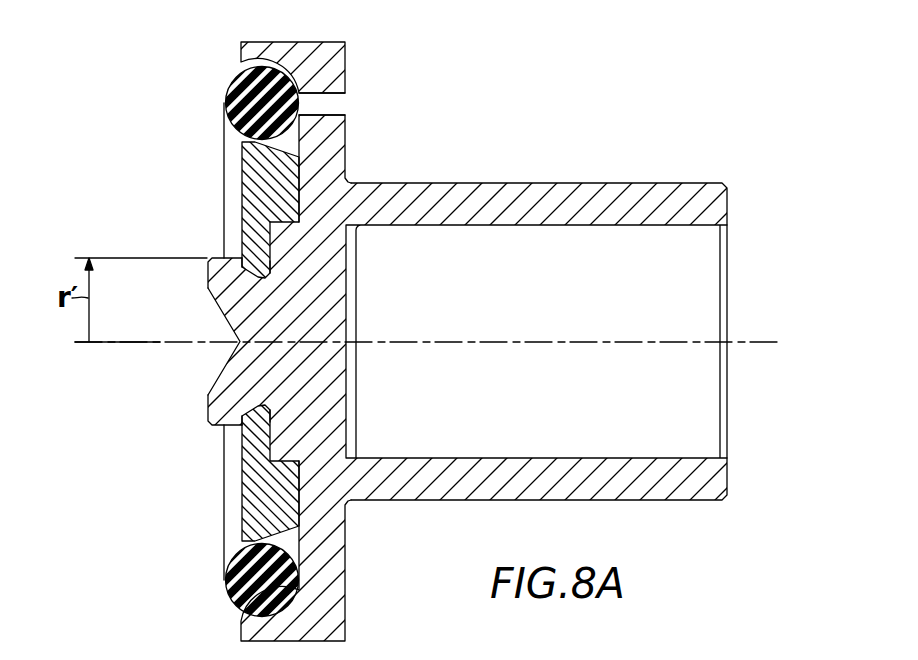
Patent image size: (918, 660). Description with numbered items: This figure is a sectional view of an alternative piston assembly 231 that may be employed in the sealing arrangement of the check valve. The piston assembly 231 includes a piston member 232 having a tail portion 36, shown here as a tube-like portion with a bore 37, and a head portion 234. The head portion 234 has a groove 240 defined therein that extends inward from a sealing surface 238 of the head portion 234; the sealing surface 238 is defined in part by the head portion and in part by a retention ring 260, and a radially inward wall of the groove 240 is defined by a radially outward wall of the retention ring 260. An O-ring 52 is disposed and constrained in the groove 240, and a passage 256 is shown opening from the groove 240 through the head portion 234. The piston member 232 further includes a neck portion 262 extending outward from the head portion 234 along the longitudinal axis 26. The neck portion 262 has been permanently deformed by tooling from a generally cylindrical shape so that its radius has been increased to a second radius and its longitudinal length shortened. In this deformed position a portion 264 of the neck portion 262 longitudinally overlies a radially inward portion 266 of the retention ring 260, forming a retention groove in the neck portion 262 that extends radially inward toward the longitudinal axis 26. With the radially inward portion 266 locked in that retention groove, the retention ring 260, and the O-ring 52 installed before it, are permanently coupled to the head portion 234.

The piston assembly 231 is at (110, 200).
The piston member 232 is at (460, 195).
The head portion 234 is at (277, 48).
The tail portion 36 is at (617, 193).
The bore 37 is at (698, 290).
The longitudinal axis 26 is at (465, 340).
The O-ring 52 is at (250, 92).
The sealing surface 238 is at (236, 169).
The groove 240 is at (290, 143).
The radial passage 256 is at (335, 101).
The retention ring 260 is at (258, 208).
The neck portion 262 is at (228, 401).
The portion of neck portion 264 is at (256, 420).
The radially inward portion of retention ring 266 is at (208, 290).